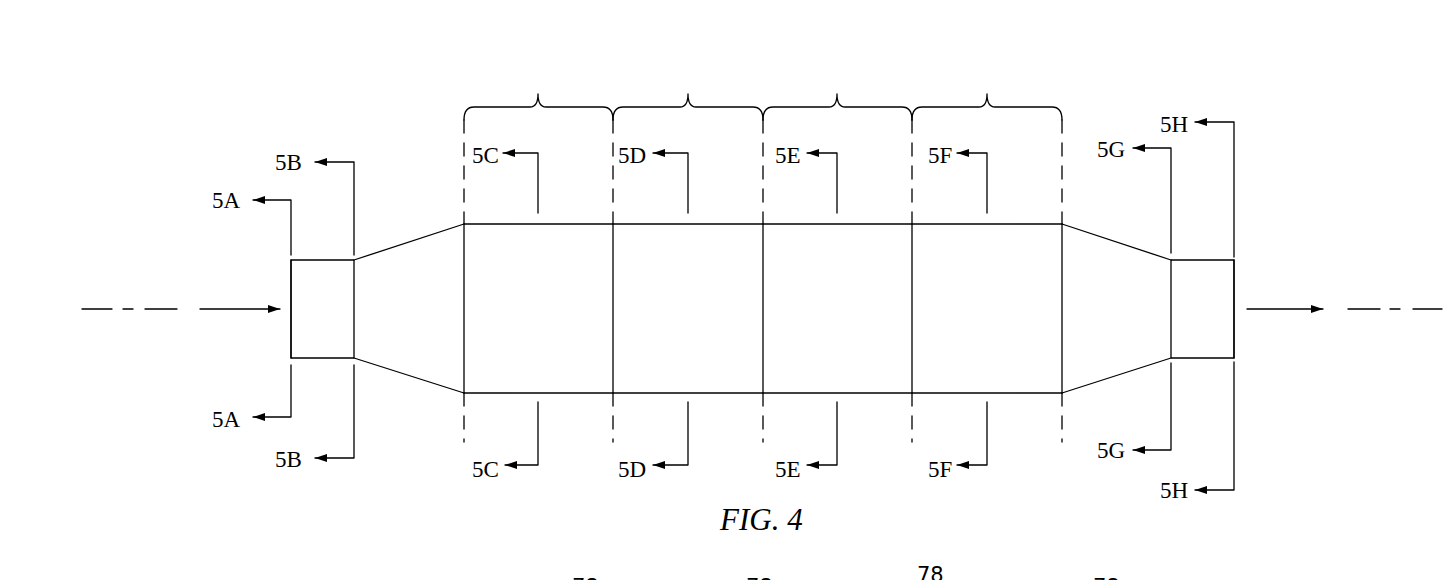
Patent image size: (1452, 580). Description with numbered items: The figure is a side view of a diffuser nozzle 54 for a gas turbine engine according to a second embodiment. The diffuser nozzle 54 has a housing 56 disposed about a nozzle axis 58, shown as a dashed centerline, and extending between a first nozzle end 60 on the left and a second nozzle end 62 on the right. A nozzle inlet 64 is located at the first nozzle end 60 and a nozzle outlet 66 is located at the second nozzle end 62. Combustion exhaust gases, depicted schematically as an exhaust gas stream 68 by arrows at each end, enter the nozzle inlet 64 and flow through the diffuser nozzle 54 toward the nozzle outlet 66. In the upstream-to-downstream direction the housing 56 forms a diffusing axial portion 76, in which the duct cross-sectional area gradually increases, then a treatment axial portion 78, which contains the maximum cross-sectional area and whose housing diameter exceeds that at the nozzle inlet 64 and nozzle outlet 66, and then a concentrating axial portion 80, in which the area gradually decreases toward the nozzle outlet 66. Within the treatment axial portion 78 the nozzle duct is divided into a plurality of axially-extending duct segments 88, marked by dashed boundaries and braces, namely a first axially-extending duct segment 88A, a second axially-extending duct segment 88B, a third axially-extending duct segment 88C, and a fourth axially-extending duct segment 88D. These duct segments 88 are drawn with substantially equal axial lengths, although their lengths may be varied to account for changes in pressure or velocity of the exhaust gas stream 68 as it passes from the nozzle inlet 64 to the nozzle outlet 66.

The diffuser nozzle 54 is at (1310, 168).
The housing 56 is at (1018, 395).
The nozzle axis 58 is at (1433, 309).
The first nozzle end 60 is at (277, 350).
The second nozzle end 62 is at (1248, 352).
The nozzle inlet 64 is at (331, 267).
The nozzle outlet 66 is at (1209, 263).
The exhaust gas stream 68 is at (222, 307).
The diffusing axial portion 76 is at (428, 230).
The treatment axial portion 78 is at (862, 208).
The concentrating axial portion 80 is at (1100, 233).
The plurality of axially-extending duct segments 88 is at (478, 97).
The first axially-extending duct segment 88A is at (538, 254).
The second axially-extending duct segment 88B is at (688, 254).
The third axially-extending duct segment 88C is at (837, 254).
The fourth axially-extending duct segment 88D is at (987, 254).